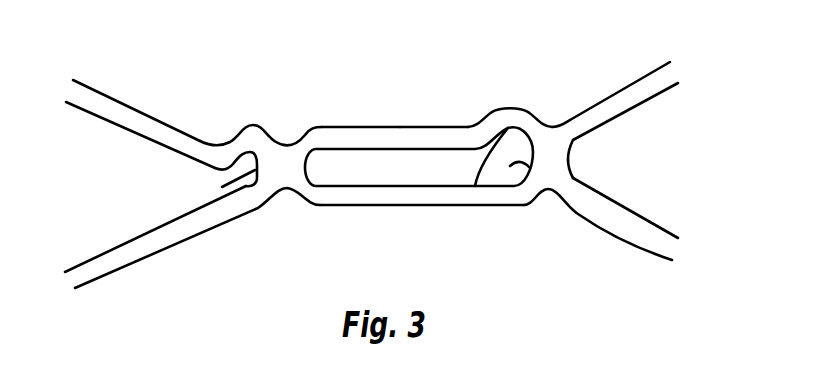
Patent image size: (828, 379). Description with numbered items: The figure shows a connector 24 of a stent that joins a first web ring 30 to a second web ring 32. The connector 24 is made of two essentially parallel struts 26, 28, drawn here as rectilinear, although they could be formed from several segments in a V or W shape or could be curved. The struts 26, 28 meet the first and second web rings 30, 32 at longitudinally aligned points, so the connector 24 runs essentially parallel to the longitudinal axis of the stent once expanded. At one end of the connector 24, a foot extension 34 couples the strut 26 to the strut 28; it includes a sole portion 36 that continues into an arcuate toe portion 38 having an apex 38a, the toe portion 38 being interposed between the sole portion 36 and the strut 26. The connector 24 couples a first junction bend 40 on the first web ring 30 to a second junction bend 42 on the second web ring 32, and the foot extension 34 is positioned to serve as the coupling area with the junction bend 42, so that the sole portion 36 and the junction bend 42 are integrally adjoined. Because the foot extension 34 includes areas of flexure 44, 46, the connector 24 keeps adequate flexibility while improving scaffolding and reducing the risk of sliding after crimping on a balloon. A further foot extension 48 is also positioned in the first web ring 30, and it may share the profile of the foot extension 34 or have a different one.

The connector 24 is at (393, 123).
The strut 26 is at (325, 127).
The strut 28 is at (323, 207).
The first web ring 30 is at (136, 106).
The second web ring 32 is at (615, 84).
The foot extension 34 is at (547, 110).
The sole portion 36 is at (510, 166).
The toe portion 38 is at (509, 107).
The apex 38a is at (520, 106).
The first junction bend 40 is at (222, 187).
The second junction bend 42 is at (568, 159).
The area of flexure 44 is at (486, 116).
The area of flexure 46 is at (473, 186).
The foot extension 48 is at (253, 122).